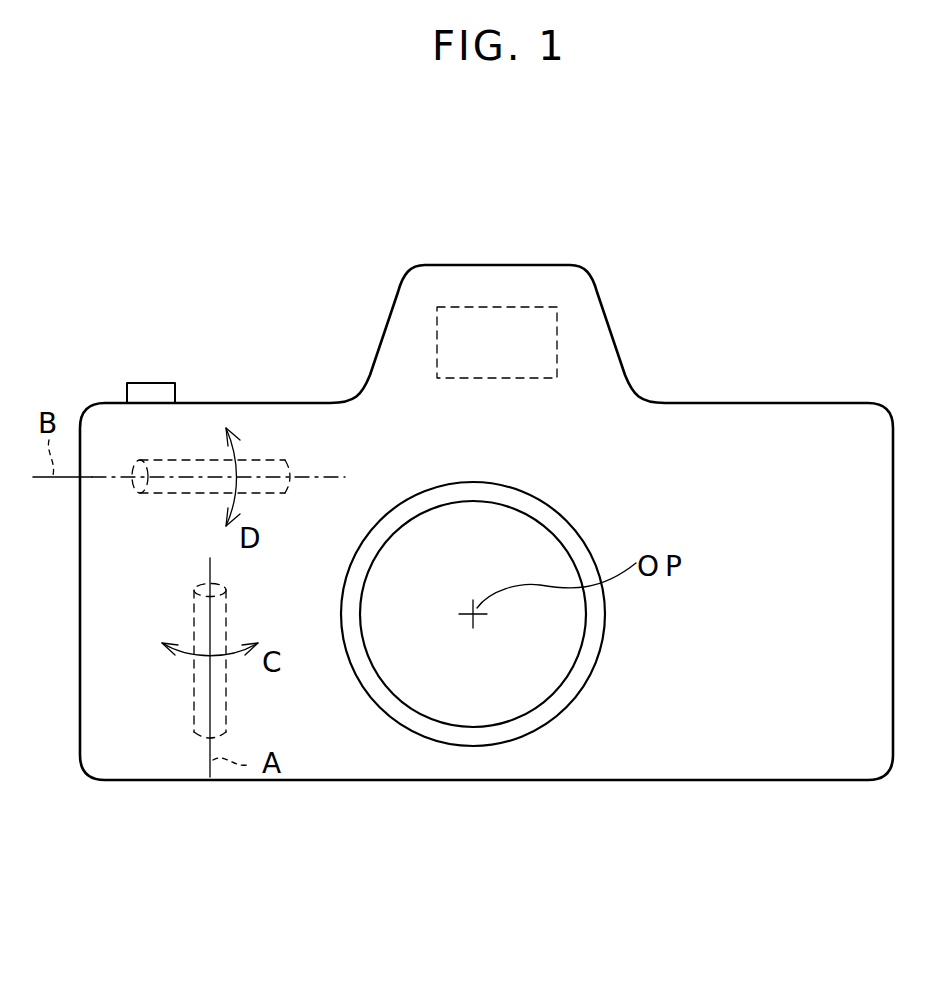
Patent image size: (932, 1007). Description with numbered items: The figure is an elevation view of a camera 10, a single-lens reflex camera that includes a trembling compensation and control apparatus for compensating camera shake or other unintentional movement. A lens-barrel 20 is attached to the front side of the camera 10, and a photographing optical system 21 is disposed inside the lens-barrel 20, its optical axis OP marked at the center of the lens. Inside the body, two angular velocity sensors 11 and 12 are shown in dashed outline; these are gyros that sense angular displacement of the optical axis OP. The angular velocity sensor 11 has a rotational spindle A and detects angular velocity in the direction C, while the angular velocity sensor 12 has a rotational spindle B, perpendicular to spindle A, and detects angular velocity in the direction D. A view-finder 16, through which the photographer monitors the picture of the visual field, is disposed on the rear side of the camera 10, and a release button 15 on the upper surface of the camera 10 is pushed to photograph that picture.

The camera 10 is at (735, 392).
The angular velocity sensor 11 is at (195, 703).
The angular velocity sensor 12 is at (263, 460).
The release button 15 is at (150, 383).
The view-finder 16 is at (497, 307).
The lens-barrel 20 is at (469, 735).
The photographing optical system 21 is at (438, 724).